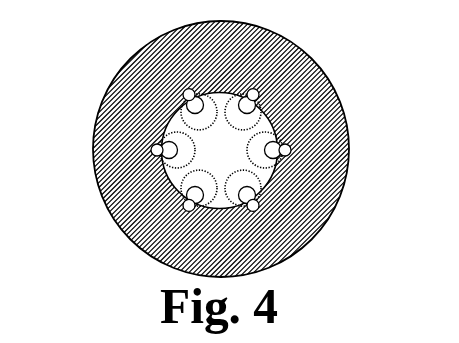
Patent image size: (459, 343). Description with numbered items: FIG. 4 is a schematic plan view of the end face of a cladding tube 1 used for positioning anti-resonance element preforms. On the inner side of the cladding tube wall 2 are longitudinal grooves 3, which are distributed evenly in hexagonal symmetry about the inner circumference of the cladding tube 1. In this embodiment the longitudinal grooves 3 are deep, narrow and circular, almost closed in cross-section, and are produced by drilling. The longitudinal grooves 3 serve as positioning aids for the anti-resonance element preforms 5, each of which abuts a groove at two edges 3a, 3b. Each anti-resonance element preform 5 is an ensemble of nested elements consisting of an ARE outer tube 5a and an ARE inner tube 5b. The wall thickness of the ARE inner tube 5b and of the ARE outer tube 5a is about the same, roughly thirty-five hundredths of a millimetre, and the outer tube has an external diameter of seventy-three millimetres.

The cladding tube 1 is at (316, 40).
The cladding tube wall 2 is at (158, 85).
The longitudinal groove 3 is at (186, 209).
The edge 3a is at (159, 142).
The edge 3b is at (157, 156).
The anti-resonance element preform 5 is at (275, 177).
The ARE outer tube 5a is at (278, 139).
The ARE inner tube 5b is at (283, 156).